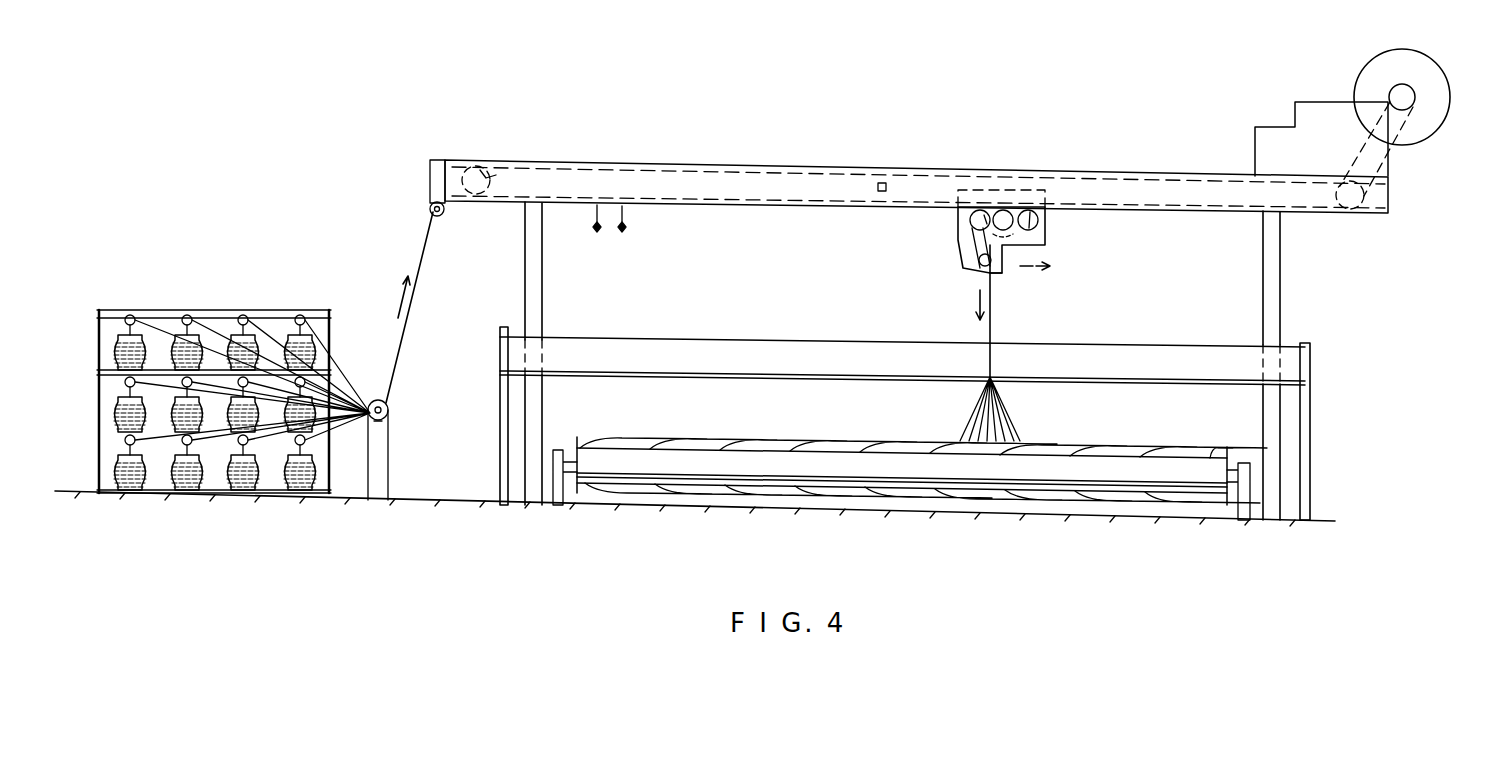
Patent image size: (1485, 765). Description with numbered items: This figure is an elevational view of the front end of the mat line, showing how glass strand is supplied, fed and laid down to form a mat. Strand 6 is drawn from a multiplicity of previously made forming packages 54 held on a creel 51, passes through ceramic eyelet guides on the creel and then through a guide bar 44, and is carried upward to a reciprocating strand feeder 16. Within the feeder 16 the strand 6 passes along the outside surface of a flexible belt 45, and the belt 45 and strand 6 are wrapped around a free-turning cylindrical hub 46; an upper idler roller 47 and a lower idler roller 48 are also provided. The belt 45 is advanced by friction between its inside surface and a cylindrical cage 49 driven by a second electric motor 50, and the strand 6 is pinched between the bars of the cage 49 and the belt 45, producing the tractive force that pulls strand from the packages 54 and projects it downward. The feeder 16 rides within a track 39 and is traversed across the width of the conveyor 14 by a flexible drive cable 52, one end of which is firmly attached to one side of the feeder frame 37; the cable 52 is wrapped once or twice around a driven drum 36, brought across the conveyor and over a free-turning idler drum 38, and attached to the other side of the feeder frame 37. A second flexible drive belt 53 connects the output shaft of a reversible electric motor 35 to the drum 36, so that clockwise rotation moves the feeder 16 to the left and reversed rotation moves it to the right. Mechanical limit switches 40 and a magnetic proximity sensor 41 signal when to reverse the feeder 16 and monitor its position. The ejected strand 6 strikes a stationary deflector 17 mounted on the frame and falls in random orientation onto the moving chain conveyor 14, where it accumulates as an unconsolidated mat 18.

The strand 6 is at (418, 246).
The conveyor 14 is at (1195, 450).
The reciprocating strand feeder 16 is at (1003, 276).
The stationary deflector 17 is at (1170, 346).
The mat 18 is at (1085, 440).
The reversible electric motor 35 is at (1398, 52).
The driven drum 36 is at (1388, 209).
The feeder frame 37 is at (1046, 238).
The idler drum 38 is at (498, 160).
The track 39 is at (703, 162).
The mechanical limit switch 40 is at (622, 232).
The magnetic proximity sensor 41 is at (882, 183).
The guide bar 44 is at (391, 412).
The flexible belt 45 is at (972, 245).
The cylindrical hub 46 is at (1031, 210).
The upper idler roller 47 is at (968, 224).
The lower idler roller 48 is at (980, 270).
The cylindrical cage 49 is at (1003, 210).
The second electric motor 50 is at (1043, 257).
The creel 51 is at (213, 310).
The drive cable 52 is at (1183, 175).
The second flexible drive belt 53 is at (1405, 130).
The forming package 54 is at (230, 478).